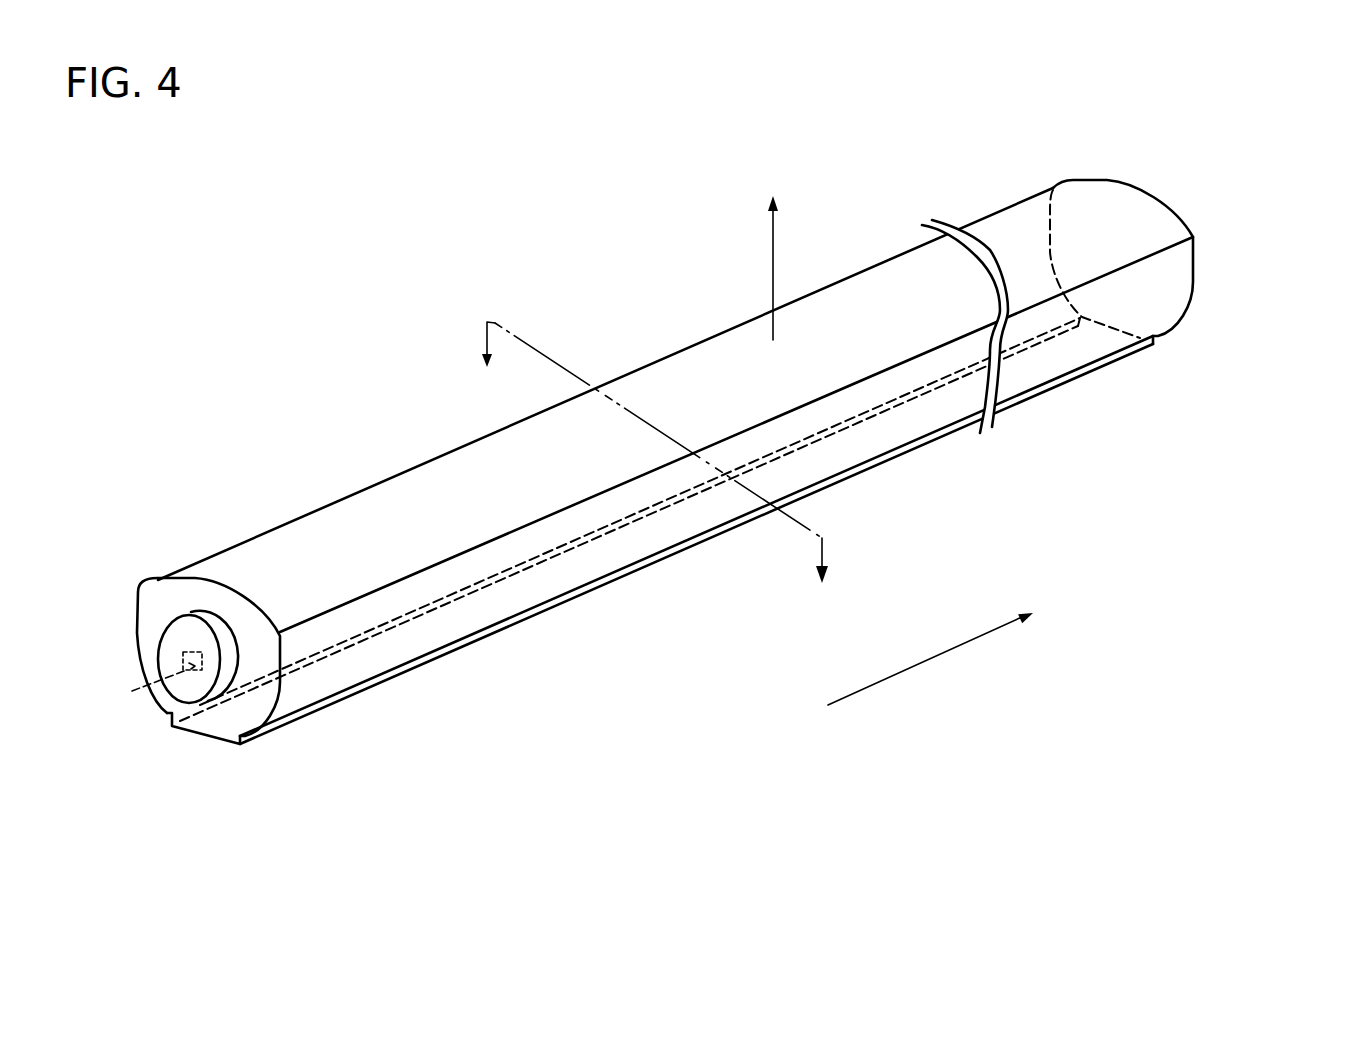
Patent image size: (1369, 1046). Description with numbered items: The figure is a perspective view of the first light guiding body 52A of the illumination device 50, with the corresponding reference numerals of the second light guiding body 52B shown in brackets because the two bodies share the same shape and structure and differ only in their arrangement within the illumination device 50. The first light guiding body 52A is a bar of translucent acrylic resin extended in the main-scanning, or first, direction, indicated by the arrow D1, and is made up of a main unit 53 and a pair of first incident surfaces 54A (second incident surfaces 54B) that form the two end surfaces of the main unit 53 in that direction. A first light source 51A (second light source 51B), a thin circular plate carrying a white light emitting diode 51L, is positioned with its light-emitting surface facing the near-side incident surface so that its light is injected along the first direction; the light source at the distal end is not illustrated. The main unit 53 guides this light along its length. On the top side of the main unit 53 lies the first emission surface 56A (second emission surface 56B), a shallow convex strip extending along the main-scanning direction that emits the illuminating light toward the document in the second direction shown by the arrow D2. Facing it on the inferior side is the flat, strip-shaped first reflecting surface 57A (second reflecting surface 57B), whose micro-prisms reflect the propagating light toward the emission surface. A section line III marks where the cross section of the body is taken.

The illumination device 50 is at (437, 272).
The first light source 51A is at (186, 581).
The second light source 51B is at (180, 606).
The white light emitting diode 51L is at (143, 679).
The first light guiding body 52A is at (605, 384).
The second light guiding body 52B is at (669, 342).
The main unit 53 is at (596, 505).
The first incident surface 54A is at (766, 564).
The second incident surface 54B is at (225, 718).
The first emission surface 56A is at (736, 434).
The second emission surface 56B is at (370, 520).
The first reflecting surface 57A is at (696, 540).
The second reflecting surface 57B is at (476, 607).
The section line III- III is at (654, 467).
The longitudinal direction D1 is at (947, 655).
The arrow D2 (second direction) D2 is at (774, 250).